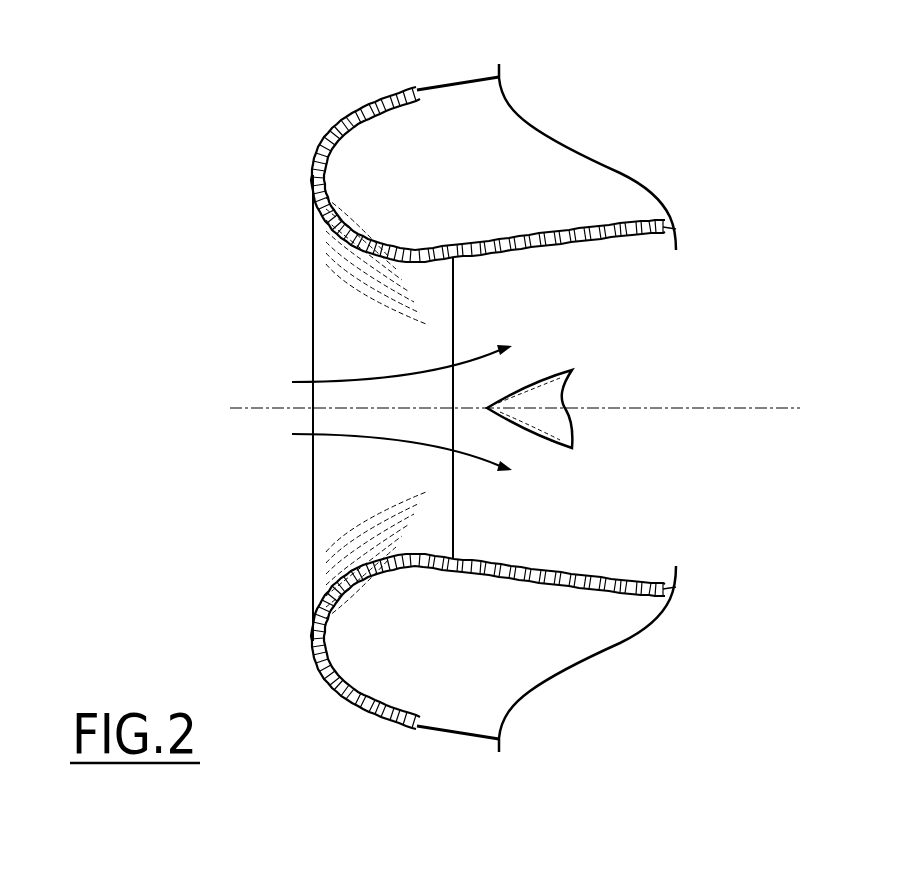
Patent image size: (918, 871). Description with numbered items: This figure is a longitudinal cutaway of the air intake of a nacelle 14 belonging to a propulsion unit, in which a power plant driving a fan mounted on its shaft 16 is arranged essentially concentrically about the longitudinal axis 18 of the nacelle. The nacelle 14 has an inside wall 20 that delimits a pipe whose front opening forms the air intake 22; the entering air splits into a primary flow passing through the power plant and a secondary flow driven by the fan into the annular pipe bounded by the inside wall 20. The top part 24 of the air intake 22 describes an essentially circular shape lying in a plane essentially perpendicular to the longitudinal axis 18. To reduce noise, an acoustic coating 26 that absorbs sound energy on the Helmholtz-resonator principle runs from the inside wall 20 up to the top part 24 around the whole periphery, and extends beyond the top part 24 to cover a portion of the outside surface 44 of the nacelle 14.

The nacelle 14 is at (461, 745).
The shaft 16 is at (550, 397).
The longitudinal axis 18 is at (727, 408).
The inside wall 20 is at (622, 240).
The air intake 22 is at (330, 322).
The top part 24 is at (313, 178).
The acoustic coating 26 is at (448, 245).
The outside surface 44 is at (443, 85).